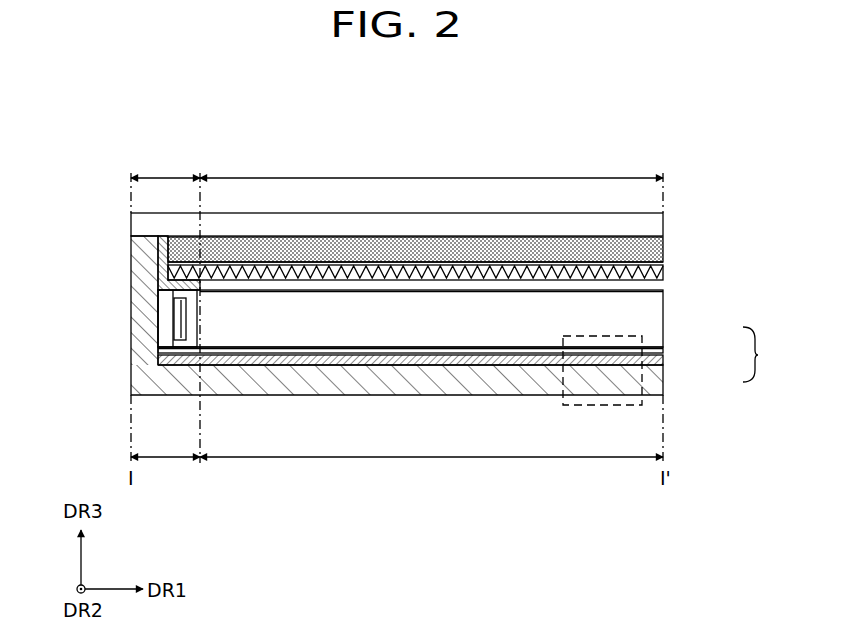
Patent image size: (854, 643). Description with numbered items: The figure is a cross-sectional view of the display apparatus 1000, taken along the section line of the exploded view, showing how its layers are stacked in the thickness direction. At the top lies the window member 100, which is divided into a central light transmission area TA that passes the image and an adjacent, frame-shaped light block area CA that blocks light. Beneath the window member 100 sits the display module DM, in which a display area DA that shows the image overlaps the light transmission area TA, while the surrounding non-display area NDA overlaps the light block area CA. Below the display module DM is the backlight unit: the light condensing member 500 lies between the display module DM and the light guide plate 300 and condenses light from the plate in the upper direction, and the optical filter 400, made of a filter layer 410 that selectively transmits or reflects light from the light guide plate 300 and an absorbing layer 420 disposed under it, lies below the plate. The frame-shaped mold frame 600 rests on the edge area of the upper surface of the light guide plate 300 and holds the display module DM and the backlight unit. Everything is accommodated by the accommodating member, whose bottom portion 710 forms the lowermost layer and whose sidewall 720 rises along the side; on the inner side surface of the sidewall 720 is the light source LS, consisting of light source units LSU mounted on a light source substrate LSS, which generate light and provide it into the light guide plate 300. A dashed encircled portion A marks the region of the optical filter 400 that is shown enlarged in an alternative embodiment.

The display apparatus 1000 is at (600, 137).
The window member 100 is at (652, 225).
The display module DM is at (652, 250).
The light condensing member 500 is at (655, 263).
The light guide plate 300 is at (652, 310).
The optical filter 400 is at (772, 354).
The filter layer 410 is at (663, 350).
The absorbing layer 420 is at (663, 360).
The mold frame 600 is at (163, 272).
The sidewall 720 is at (142, 246).
The bottom portion 710 is at (402, 383).
The light source LS is at (107, 327).
The light source unit LSU is at (165, 306).
The light source substrate LSS is at (168, 328).
The encircled portion A is at (663, 385).
The light block area CA is at (165, 166).
The light transmission area TA is at (431, 166).
The non-display area NDA is at (165, 470).
The display area DA is at (431, 470).